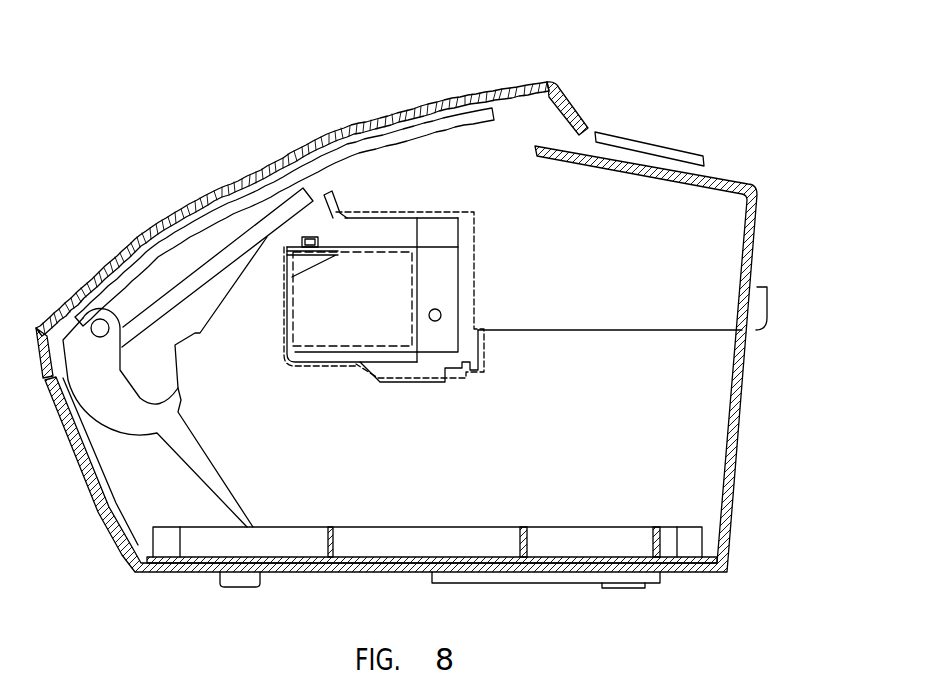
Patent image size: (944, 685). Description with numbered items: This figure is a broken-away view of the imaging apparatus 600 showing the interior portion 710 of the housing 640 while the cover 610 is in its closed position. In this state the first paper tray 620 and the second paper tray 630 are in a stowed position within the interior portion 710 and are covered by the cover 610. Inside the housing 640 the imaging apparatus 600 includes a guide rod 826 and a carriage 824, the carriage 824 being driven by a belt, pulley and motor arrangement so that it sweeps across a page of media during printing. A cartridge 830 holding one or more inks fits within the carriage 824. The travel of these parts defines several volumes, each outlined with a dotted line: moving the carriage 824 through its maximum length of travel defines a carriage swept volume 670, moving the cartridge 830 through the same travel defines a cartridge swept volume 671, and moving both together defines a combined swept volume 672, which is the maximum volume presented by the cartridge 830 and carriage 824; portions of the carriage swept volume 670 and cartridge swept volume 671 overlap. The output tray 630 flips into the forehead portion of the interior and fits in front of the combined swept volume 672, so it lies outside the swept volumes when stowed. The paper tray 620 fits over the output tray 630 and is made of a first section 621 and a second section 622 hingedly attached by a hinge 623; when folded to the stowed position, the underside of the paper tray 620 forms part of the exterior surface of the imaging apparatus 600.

The imaging apparatus 600 is at (662, 72).
The cover 610 is at (398, 113).
The first paper tray 620 is at (290, 157).
The first section 621 is at (137, 268).
The second section 622 is at (92, 392).
The hinge 623 is at (100, 327).
The second paper tray 630 is at (193, 276).
The housing 640 is at (737, 493).
The carriage swept volume 670 is at (433, 337).
The cartridge swept volume 671 is at (293, 338).
The combined swept volume 672 is at (402, 267).
The interior portion 710 is at (667, 415).
The carriage 824 is at (327, 358).
The guide rod 826 is at (445, 315).
The cartridge 830 is at (287, 258).